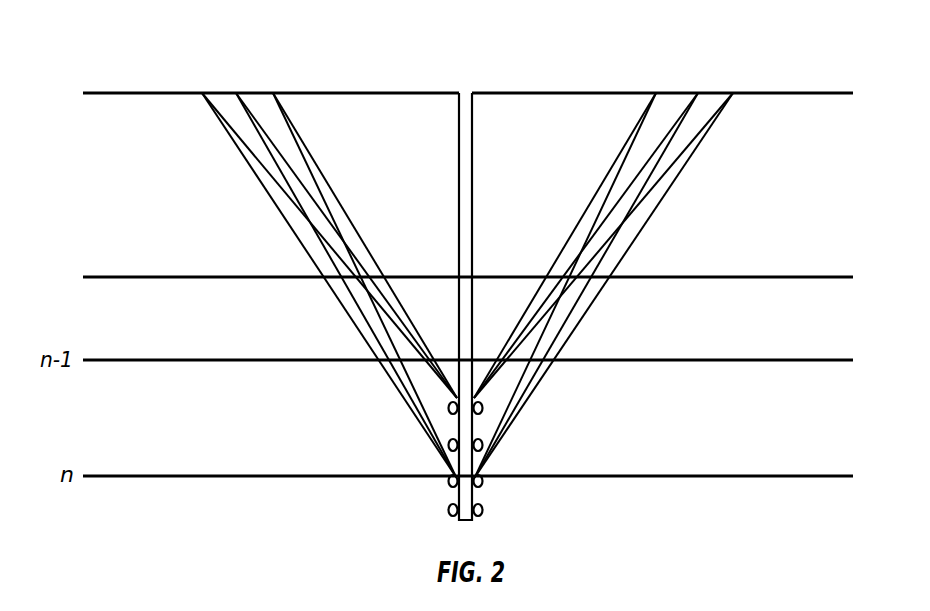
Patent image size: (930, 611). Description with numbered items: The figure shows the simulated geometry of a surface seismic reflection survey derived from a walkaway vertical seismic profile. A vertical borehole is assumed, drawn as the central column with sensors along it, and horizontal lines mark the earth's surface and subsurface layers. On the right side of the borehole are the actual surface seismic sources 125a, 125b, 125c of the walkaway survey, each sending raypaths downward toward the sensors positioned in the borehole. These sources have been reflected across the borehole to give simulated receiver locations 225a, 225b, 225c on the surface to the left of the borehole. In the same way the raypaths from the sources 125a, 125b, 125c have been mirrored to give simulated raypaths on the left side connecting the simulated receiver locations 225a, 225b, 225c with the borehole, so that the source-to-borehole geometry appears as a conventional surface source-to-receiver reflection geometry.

The simulated receiver location 225a is at (273, 93).
The simulated receiver location 225b is at (236, 93).
The simulated receiver location 225c is at (202, 93).
The seismic source 125a is at (656, 93).
The seismic source 125b is at (698, 93).
The seismic source 125c is at (733, 93).